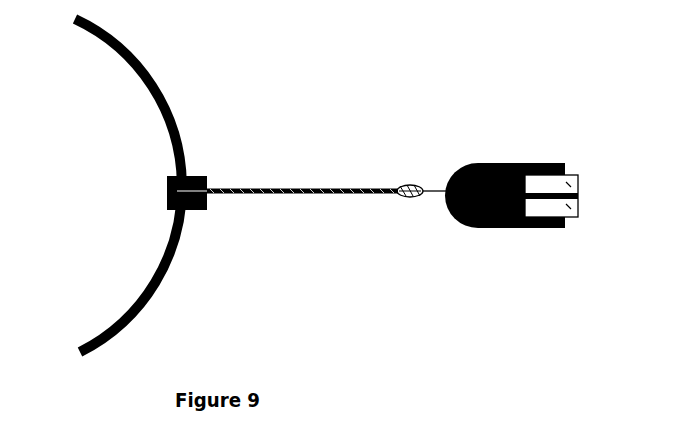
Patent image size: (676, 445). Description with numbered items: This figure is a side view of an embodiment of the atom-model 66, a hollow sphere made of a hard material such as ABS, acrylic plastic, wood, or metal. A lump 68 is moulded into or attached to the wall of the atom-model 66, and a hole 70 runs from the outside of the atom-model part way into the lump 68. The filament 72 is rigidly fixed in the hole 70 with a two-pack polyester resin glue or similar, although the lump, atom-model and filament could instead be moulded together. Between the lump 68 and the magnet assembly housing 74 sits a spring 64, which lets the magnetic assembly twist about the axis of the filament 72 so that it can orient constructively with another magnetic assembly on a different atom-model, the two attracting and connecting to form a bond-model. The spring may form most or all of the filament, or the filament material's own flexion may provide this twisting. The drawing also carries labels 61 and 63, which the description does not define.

The antenna feed point 61 is at (167, 190).
The connector lead 63 is at (445, 193).
The spring 64 is at (401, 185).
The atom-model 66 is at (188, 123).
The lump 68 is at (205, 206).
The hole 70 is at (207, 203).
The filament 72 is at (283, 187).
The magnet assembly housing 74 is at (470, 163).